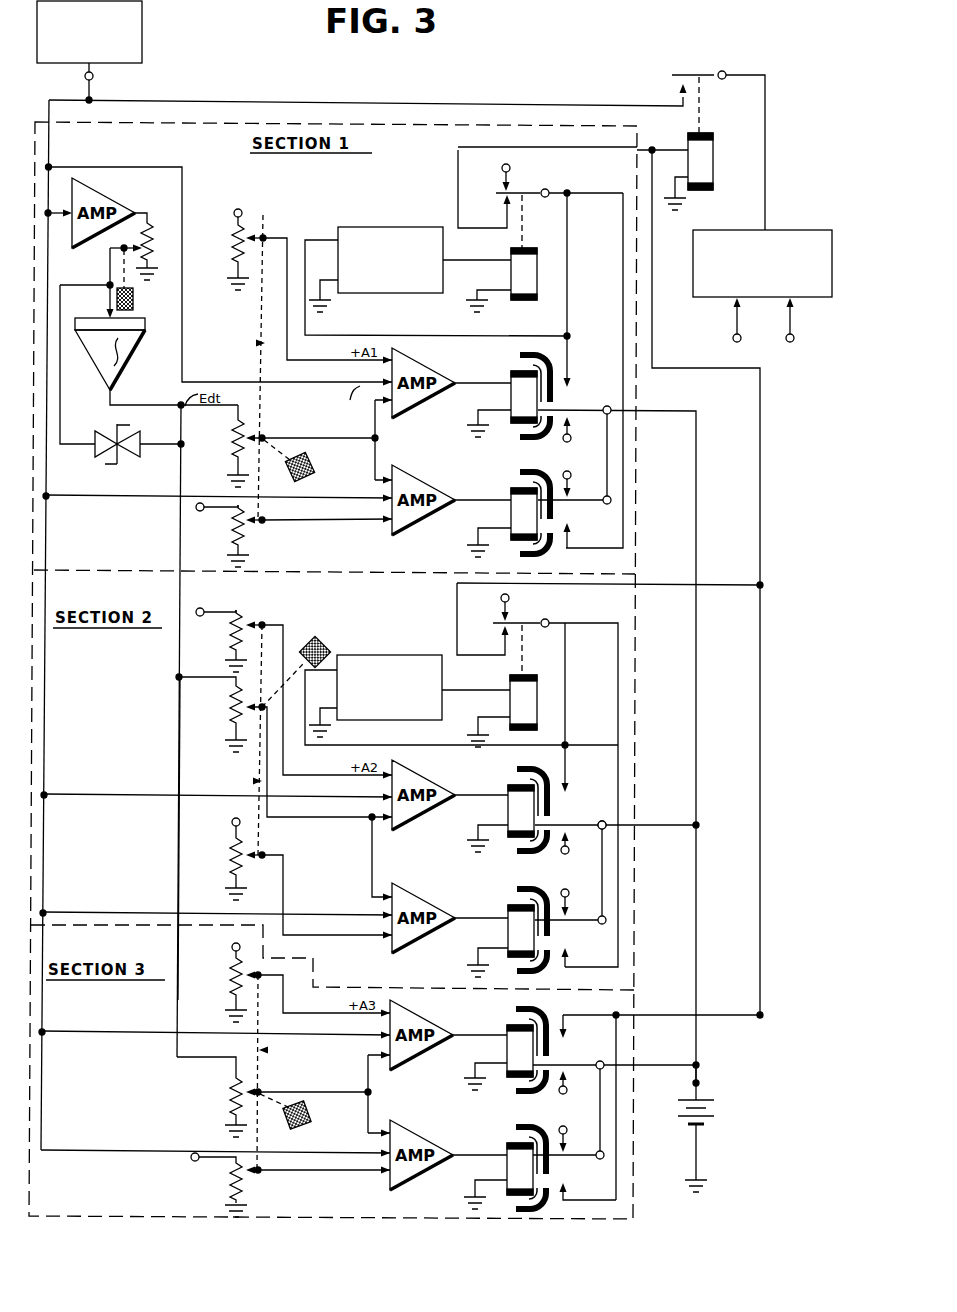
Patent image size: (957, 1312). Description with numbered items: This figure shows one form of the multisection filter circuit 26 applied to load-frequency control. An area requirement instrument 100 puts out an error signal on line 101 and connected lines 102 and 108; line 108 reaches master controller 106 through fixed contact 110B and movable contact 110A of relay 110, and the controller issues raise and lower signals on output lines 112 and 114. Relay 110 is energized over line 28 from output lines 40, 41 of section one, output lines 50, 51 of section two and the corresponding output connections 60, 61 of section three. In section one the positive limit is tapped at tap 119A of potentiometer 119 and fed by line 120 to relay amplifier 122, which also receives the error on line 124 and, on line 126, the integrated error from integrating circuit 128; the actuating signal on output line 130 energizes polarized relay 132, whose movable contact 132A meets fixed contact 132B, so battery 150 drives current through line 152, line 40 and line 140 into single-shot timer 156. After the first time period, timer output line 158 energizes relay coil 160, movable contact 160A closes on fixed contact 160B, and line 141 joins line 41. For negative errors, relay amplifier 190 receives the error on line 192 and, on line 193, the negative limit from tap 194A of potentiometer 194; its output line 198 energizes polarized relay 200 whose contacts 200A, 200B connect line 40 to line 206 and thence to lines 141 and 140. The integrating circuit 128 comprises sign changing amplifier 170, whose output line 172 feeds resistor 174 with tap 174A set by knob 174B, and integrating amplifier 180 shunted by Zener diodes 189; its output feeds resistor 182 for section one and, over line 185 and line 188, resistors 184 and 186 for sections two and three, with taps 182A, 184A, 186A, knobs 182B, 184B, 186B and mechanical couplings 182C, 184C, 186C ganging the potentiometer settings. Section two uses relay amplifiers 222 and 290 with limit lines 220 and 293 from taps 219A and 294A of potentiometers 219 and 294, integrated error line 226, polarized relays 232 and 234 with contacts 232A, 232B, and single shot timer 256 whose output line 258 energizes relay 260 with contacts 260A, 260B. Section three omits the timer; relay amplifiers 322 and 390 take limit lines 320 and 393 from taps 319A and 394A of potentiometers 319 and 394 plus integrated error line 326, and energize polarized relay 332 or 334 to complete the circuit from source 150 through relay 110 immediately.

The area requirement instrument 100 is at (143, 22).
The line 101 is at (85, 78).
The line 102 is at (50, 155).
The filter circuit 26 is at (303, 122).
The line 108 is at (420, 108).
The movable relay contact 110A is at (694, 73).
The fixed relay contact 110B is at (680, 92).
The relay 110 is at (716, 160).
The line 28 is at (665, 150).
The output line 41 is at (577, 151).
The master controller 106 is at (797, 230).
The output line 112 is at (733, 320).
The output line 114 is at (796, 325).
The output line 51 is at (720, 586).
The output line 40 is at (662, 412).
The output line 50 is at (657, 827).
The conductor 60 is at (657, 1067).
The conductor 61 is at (715, 1018).
The line 152 is at (698, 1085).
The battery 150 is at (712, 1112).
The line 124 is at (184, 190).
The sign changing amplifier 170 is at (109, 196).
The line 172 is at (145, 216).
The adjustable tapped resistor 174 is at (152, 240).
The tap 174A is at (128, 243).
The knob 174B is at (135, 302).
The integrating circuit 128 is at (162, 374).
The integrating amplifier 180 is at (95, 372).
The Zener diodes 189 is at (126, 458).
The line 185 is at (180, 536).
The adjustable tapped resistor 182 is at (234, 440).
The adjustable tap 182A is at (265, 433).
The knob 182B is at (314, 464).
The mechanical coupling 182C is at (258, 343).
The potentiometer 119 is at (233, 238).
The tap 119A is at (266, 236).
The input line 120 is at (285, 318).
The line 126 is at (378, 430).
The line 140 is at (412, 333).
The single-shot timer 156 is at (380, 226).
The output line 158 is at (488, 262).
The relay energizing coil 160 is at (520, 299).
The movable contact 160A is at (536, 190).
The fixed contact 160B is at (500, 208).
The line 141 is at (568, 244).
The line 206 is at (622, 295).
The fixed contact 132B is at (570, 382).
The relay amplifier 122 is at (431, 362).
The output line 130 is at (483, 386).
The polarized relay 132 is at (511, 372).
The movable contact 132A is at (590, 406).
The movable contact 200A is at (585, 492).
The fixed contact 200B is at (572, 540).
The relay amplifier 190 is at (424, 472).
The output line 198 is at (487, 502).
The polarized relay 200 is at (509, 488).
The line 192 is at (110, 497).
The potentiometer 194 is at (234, 524).
The tap 194A is at (249, 525).
The line 193 is at (315, 520).
The potentiometer 219 is at (234, 622).
The tap 219A is at (250, 624).
The line 220 is at (285, 752).
The adjustable tapped resistor 184 is at (232, 712).
The adjustable tap 184A is at (245, 703).
The knob 184B is at (322, 638).
The mechanical coupling 184C is at (256, 778).
The input line 226 is at (375, 856).
The single shot timer 256 is at (395, 655).
The conductor 258 is at (490, 690).
The solenoid 260 is at (537, 678).
The switch contact 260A is at (538, 622).
The switch contact 260B is at (500, 646).
The switch contact 232B is at (570, 790).
The relay amplifier 222 is at (430, 780).
The polarized relay 232 is at (508, 788).
The switch contact 232A is at (590, 830).
The relay amplifier 290 is at (428, 898).
The polarized relay 234 is at (508, 906).
The line 188 is at (178, 850).
The potentiometer 294 is at (232, 860).
The tap 294A is at (249, 858).
The line 293 is at (316, 938).
The potentiometer 319 is at (232, 980).
The tap 319A is at (249, 974).
The line 320 is at (278, 1000).
The adjustable tapped resistor 186 is at (232, 1088).
The adjustable tap 186A is at (248, 1088).
The knob 186B is at (313, 1117).
The mechanical coupling 186C is at (264, 1052).
The line 326 is at (375, 1078).
The relay amplifier 322 is at (430, 1020).
The polarized relay 332 is at (507, 1028).
The relay amplifier 390 is at (425, 1135).
The polarized relay 334 is at (507, 1145).
The potentiometer 394 is at (233, 1178).
The tap 394A is at (246, 1166).
The line 393 is at (312, 1172).